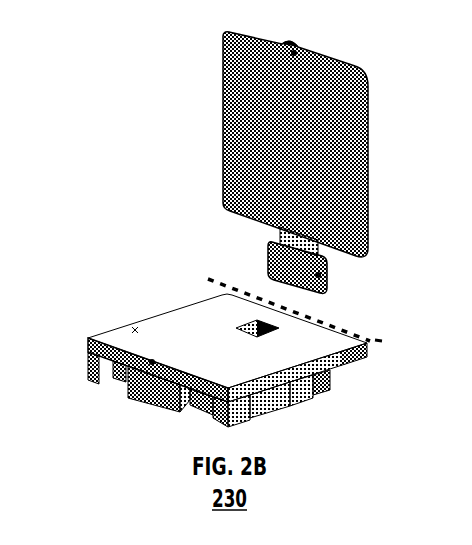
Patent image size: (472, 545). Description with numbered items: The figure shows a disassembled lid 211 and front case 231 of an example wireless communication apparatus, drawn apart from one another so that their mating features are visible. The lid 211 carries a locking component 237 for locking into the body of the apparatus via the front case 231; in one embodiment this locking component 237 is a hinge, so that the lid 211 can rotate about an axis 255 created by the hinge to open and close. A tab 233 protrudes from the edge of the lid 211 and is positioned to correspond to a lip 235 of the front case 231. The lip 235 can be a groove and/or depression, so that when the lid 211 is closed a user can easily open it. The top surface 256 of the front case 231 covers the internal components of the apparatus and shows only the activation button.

The lid 211 is at (223, 197).
The tab 233 is at (294, 54).
The locking component 237 is at (327, 275).
The front case 231 is at (132, 330).
The lip 235 is at (90, 365).
The top surface 256 is at (192, 323).
The axis 255 is at (391, 339).